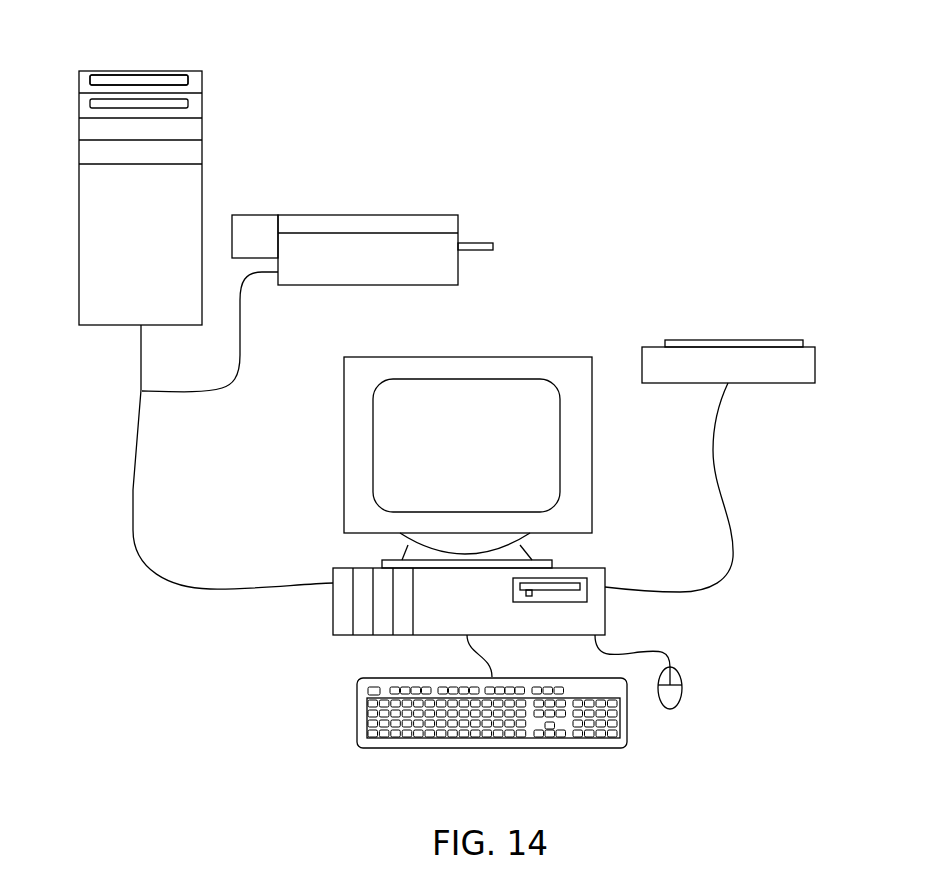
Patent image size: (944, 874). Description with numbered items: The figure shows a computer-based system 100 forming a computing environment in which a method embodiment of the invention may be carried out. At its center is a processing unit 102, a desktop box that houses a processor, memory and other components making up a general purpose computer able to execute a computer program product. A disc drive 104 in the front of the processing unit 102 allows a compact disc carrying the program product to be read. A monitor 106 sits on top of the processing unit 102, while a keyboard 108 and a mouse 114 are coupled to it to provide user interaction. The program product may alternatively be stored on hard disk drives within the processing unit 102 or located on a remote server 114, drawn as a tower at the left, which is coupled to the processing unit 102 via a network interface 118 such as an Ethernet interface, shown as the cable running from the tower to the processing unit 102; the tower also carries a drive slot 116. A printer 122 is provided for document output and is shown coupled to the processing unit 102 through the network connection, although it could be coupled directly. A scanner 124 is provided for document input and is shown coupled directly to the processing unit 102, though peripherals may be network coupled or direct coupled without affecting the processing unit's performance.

The computer-based system 100 is at (630, 110).
The processing unit 102 is at (332, 620).
The disc drive 104 is at (588, 585).
The monitor 106 is at (513, 357).
The keyboard 108 is at (357, 715).
The server 114 is at (203, 192).
The disk drive slot 116 is at (188, 80).
The network interface 118 is at (137, 437).
The printer 122 is at (413, 215).
The scanner 124 is at (770, 340).